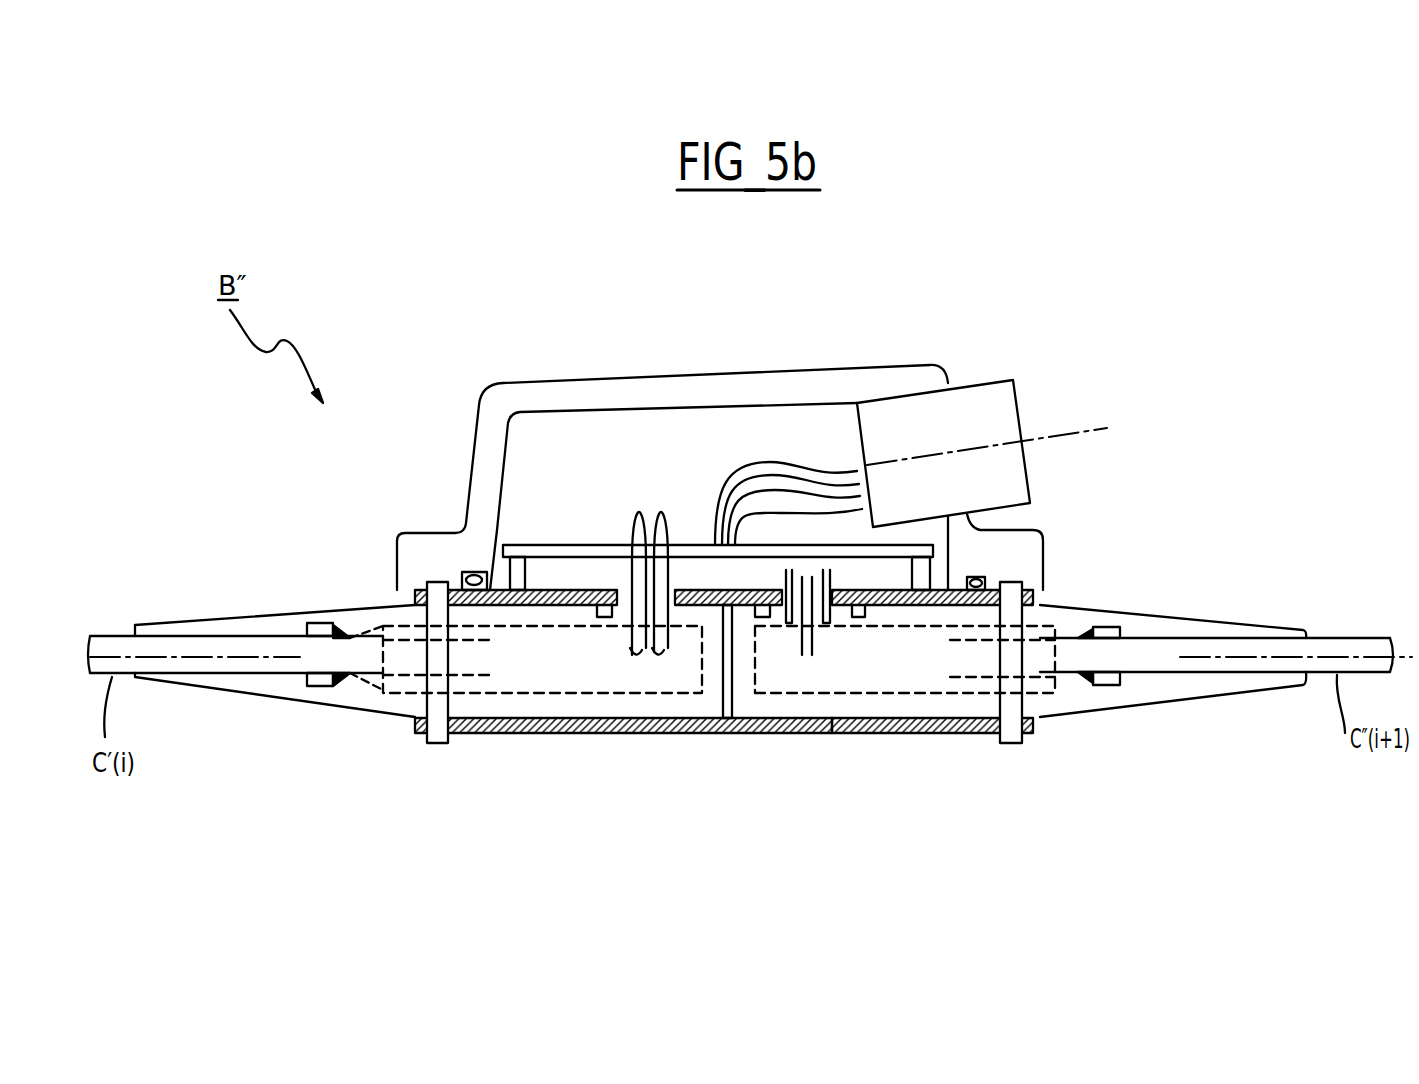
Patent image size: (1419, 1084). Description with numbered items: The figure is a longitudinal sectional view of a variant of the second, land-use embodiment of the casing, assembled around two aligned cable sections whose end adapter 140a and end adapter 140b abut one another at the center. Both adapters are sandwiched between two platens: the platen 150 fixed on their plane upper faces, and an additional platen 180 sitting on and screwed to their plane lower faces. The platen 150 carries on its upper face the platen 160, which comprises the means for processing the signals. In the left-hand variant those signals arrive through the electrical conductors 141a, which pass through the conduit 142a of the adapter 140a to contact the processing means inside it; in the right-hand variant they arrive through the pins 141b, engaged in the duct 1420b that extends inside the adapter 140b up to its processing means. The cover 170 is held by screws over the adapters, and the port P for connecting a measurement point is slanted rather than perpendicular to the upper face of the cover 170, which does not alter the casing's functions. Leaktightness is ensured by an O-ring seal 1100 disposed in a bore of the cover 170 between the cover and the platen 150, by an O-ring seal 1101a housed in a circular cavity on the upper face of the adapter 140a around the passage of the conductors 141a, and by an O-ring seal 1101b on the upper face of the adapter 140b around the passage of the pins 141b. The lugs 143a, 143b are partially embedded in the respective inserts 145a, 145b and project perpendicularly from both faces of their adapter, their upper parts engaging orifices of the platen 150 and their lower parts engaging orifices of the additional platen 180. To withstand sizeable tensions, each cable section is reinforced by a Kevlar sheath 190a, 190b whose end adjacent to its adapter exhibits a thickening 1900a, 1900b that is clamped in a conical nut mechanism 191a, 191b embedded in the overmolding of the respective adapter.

The cover 170 is at (750, 387).
The port P is at (1005, 405).
The platen 160 is at (556, 545).
The O-ring seal 1100 is at (476, 574).
The platen 150 is at (547, 607).
The additional platen 180 is at (977, 733).
The lug 143a is at (433, 744).
The lug 143b is at (1017, 743).
The O-ring seal 1101a is at (605, 620).
The O-ring seal 1101b is at (762, 620).
The end adapter 140a is at (373, 703).
The end adapter 140b is at (747, 701).
The insert 145a is at (370, 612).
The insert 145b is at (893, 696).
The conduit 142a is at (672, 626).
The electrical conductors 141a is at (628, 621).
The pins 141b is at (815, 638).
The duct 1420b is at (833, 580).
The additional sheath 190a is at (237, 681).
The additional sheath 190b is at (1213, 637).
The conical nut mechanism 191a is at (307, 622).
The conical nut mechanism 191b is at (1106, 633).
The thickening 1900a is at (333, 619).
The thickening 1900b is at (1080, 627).